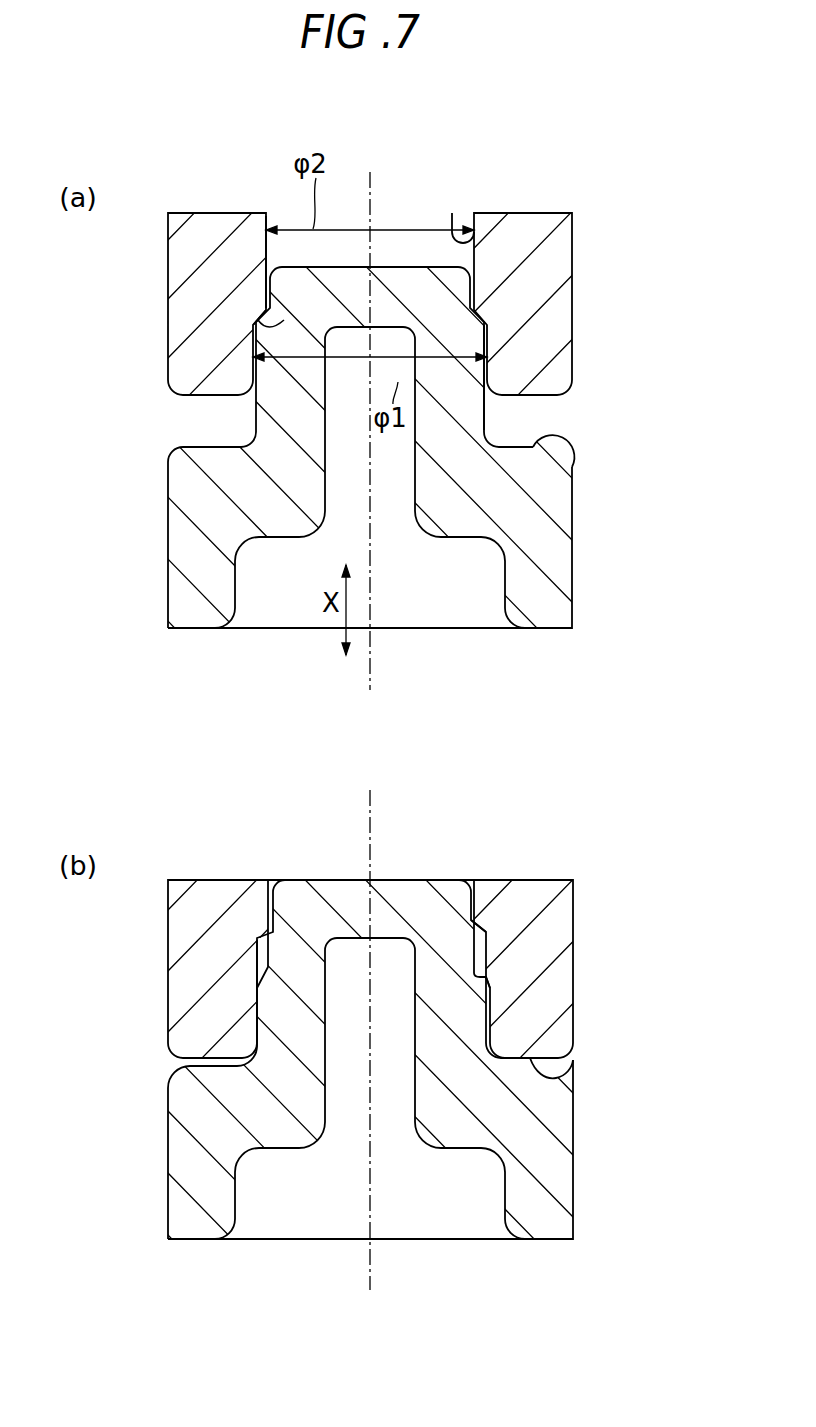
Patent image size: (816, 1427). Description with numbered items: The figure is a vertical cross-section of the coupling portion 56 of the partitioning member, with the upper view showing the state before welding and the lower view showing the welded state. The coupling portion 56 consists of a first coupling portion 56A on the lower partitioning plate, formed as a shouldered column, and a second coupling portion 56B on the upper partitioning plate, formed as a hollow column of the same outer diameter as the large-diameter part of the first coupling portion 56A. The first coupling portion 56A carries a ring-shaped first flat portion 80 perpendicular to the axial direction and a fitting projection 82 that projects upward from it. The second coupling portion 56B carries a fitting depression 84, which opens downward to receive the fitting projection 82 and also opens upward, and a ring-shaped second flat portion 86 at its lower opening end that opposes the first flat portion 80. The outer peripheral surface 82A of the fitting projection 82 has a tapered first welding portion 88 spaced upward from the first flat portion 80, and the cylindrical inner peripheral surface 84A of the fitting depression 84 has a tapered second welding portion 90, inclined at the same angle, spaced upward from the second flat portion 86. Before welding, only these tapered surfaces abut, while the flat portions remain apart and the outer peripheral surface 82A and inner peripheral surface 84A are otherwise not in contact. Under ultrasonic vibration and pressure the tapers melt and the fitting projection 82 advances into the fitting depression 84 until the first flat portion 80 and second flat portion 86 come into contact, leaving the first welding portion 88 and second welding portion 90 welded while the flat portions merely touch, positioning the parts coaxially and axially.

The coupling portion 56 is at (342, 803).
The first coupling portion 56A is at (560, 548).
The second coupling portion 56B is at (560, 262).
The first flat portion 80 is at (532, 1076).
The fitting projection 82 is at (408, 879).
The outer peripheral surface 82A is at (487, 407).
The fitting depression 84 is at (258, 1060).
The inner peripheral surface 84A is at (456, 228).
The second flat portion 86 is at (548, 1047).
The first welding portion 88 is at (482, 924).
The second welding portion 90 is at (488, 975).